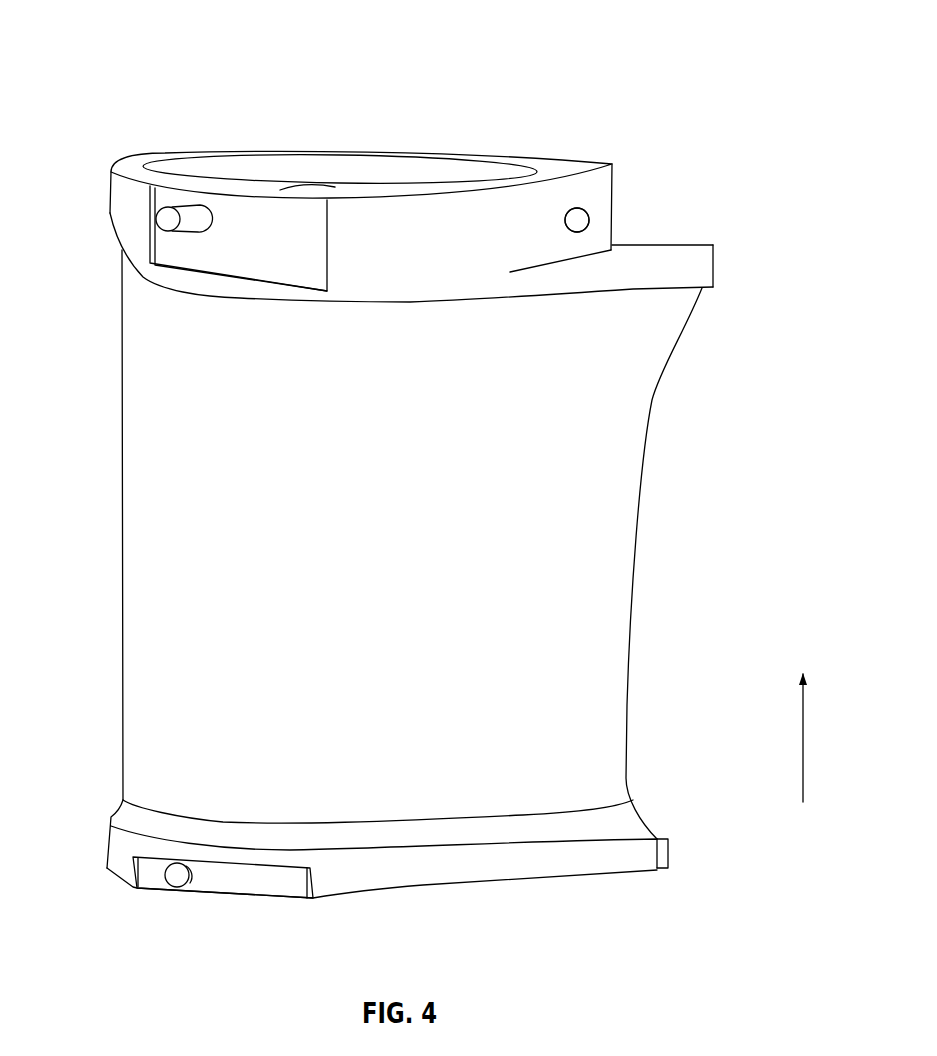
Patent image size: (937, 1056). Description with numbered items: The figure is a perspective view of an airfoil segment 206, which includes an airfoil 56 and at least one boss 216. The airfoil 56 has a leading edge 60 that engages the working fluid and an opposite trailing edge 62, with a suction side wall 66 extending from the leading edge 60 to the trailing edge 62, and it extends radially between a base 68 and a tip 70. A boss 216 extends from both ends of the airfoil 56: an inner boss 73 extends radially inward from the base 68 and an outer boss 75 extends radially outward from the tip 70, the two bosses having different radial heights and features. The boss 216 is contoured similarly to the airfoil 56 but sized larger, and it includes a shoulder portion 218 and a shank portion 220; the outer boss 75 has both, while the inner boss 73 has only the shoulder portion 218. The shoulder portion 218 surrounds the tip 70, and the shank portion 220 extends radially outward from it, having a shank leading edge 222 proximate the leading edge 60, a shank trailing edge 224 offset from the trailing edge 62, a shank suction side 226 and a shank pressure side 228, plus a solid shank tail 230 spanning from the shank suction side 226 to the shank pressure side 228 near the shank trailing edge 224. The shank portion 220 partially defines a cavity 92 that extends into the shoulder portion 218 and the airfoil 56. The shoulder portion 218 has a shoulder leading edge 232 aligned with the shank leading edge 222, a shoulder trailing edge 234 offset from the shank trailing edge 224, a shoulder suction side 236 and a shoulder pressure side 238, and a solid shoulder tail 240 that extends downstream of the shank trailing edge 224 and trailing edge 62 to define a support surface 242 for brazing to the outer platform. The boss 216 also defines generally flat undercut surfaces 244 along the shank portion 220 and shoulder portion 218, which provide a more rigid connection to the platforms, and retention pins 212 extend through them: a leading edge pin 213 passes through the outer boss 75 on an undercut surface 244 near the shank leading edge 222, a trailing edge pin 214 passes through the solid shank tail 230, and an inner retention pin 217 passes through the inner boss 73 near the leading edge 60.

The airfoil 56 is at (717, 473).
The leading edge 60 is at (121, 543).
The trailing edge 62 is at (637, 592).
The suction side wall 66 is at (197, 647).
The base 68 is at (655, 837).
The tip 70 is at (128, 265).
The outer boss 75 is at (622, 162).
The inner boss 73 is at (100, 828).
The cavity 92 is at (424, 177).
The airfoil segment 206 is at (632, 79).
The retention pins 212 is at (371, 496).
The leading edge pin 213 is at (192, 206).
The trailing edge pin 214 is at (566, 210).
The boss 216 is at (431, 547).
The inner retention pin 217 is at (175, 884).
The shoulder portion 218 is at (718, 245).
The shank portion 220 is at (623, 163).
The shank leading edge 222 is at (110, 172).
The shank trailing edge 224 is at (614, 185).
The shank suction side 226 is at (382, 200).
The shank pressure side 228 is at (300, 156).
The solid shank tail 230 is at (572, 165).
The shoulder leading edge 232 is at (109, 212).
The shoulder trailing edge 234 is at (713, 288).
The shoulder suction side 236 is at (538, 280).
The shoulder pressure side 238 is at (668, 245).
The solid shoulder tail 240 is at (655, 247).
The support surface 242 is at (708, 247).
The undercut surfaces 244 is at (237, 263).